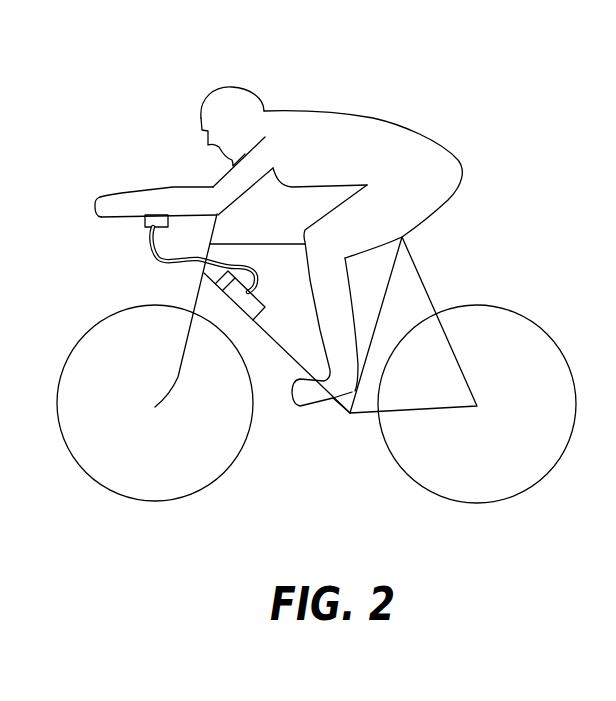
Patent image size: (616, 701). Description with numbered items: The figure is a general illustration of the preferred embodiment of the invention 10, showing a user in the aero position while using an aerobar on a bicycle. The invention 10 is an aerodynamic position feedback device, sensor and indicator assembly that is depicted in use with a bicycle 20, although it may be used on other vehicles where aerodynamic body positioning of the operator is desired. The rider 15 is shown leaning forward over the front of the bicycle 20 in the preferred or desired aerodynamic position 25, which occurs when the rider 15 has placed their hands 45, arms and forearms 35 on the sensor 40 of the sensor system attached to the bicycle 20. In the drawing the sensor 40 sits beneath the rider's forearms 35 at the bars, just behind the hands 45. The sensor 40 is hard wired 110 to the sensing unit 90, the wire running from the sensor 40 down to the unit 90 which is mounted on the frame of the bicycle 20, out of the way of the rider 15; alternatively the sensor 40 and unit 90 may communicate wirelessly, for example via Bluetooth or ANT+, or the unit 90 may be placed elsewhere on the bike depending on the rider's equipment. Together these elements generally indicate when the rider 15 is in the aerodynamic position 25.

The invention 10 is at (463, 62).
The rider 15 is at (230, 86).
The bicycle 20 is at (523, 315).
The aerodynamic position 25 is at (355, 116).
The forearms 35 is at (165, 189).
The sensor 40 is at (148, 227).
The hands 45 is at (95, 208).
The sensing unit 90 is at (260, 314).
The hard wire 110 is at (178, 266).